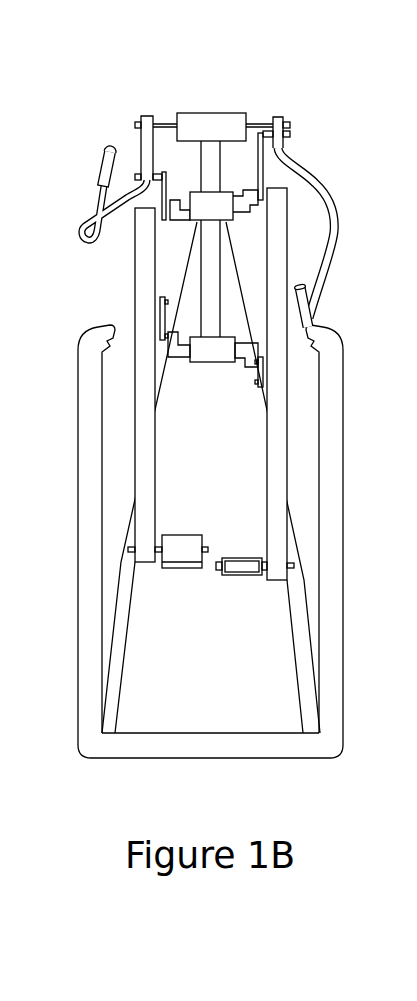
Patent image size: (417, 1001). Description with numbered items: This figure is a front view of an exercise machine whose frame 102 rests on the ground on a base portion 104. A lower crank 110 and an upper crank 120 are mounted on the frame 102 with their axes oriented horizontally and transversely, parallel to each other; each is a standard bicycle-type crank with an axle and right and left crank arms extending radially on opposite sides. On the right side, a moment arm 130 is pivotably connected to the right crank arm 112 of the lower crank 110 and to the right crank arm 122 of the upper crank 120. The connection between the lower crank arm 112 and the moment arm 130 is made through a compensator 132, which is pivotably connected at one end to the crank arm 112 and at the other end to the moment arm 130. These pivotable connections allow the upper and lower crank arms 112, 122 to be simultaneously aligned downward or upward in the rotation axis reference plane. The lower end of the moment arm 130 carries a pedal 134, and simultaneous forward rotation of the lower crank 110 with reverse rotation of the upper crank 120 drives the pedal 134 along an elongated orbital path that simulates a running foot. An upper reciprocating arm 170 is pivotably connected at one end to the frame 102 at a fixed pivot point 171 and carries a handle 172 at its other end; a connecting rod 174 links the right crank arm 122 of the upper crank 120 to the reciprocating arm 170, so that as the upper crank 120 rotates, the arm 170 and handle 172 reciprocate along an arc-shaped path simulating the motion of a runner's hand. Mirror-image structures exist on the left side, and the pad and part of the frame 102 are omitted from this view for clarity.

The frame 102 is at (95, 683).
The base portion 104 is at (270, 750).
The lower crank 110 is at (211, 358).
The right crank arm of lower crank 112 is at (249, 357).
The upper crank 120 is at (205, 205).
The right crank arm of upper crank 122 is at (172, 219).
The moment arm 130 is at (276, 508).
The compensator 132 is at (263, 367).
The pedal 134 is at (237, 569).
The upper reciprocating arm 170 is at (78, 223).
The fixed pivot point 171 is at (191, 125).
The handle 172 is at (104, 152).
The connecting rod 174 is at (162, 168).